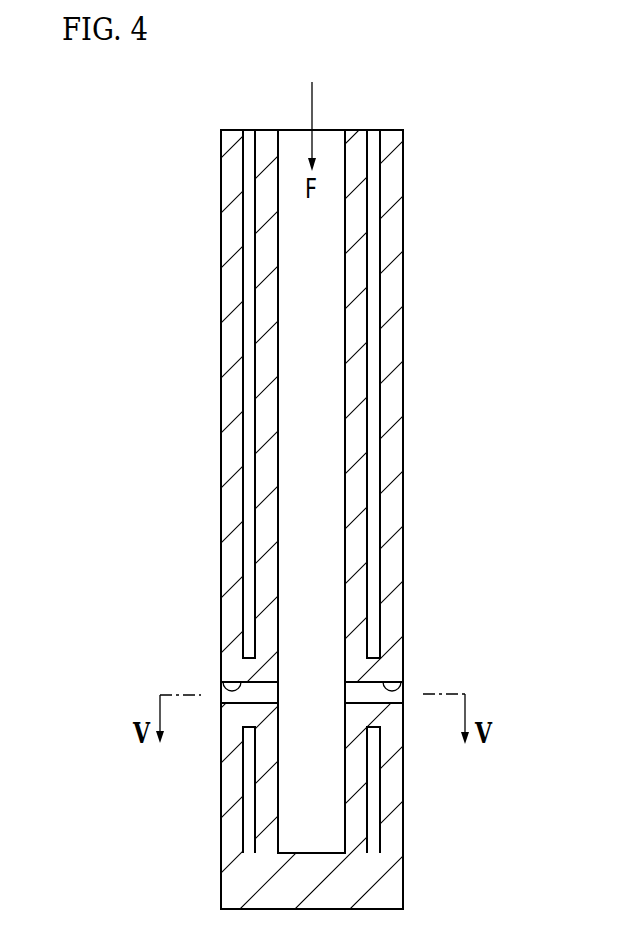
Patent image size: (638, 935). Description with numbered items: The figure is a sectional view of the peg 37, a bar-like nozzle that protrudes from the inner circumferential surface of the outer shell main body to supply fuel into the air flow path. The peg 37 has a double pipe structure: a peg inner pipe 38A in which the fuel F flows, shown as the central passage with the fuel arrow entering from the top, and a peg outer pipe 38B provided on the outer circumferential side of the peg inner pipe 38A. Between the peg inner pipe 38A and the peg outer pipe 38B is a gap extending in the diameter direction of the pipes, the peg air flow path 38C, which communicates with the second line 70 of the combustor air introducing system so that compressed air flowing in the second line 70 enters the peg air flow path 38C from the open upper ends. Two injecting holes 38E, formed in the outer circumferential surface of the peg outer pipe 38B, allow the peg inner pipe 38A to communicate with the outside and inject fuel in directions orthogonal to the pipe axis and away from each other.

The peg 37 is at (440, 148).
The peg inner pipe 38A is at (358, 377).
The peg outer pipe 38B is at (393, 282).
The peg air flow path 38C is at (373, 468).
The injecting holes 38E is at (222, 688).
The second line 70 is at (250, 121).